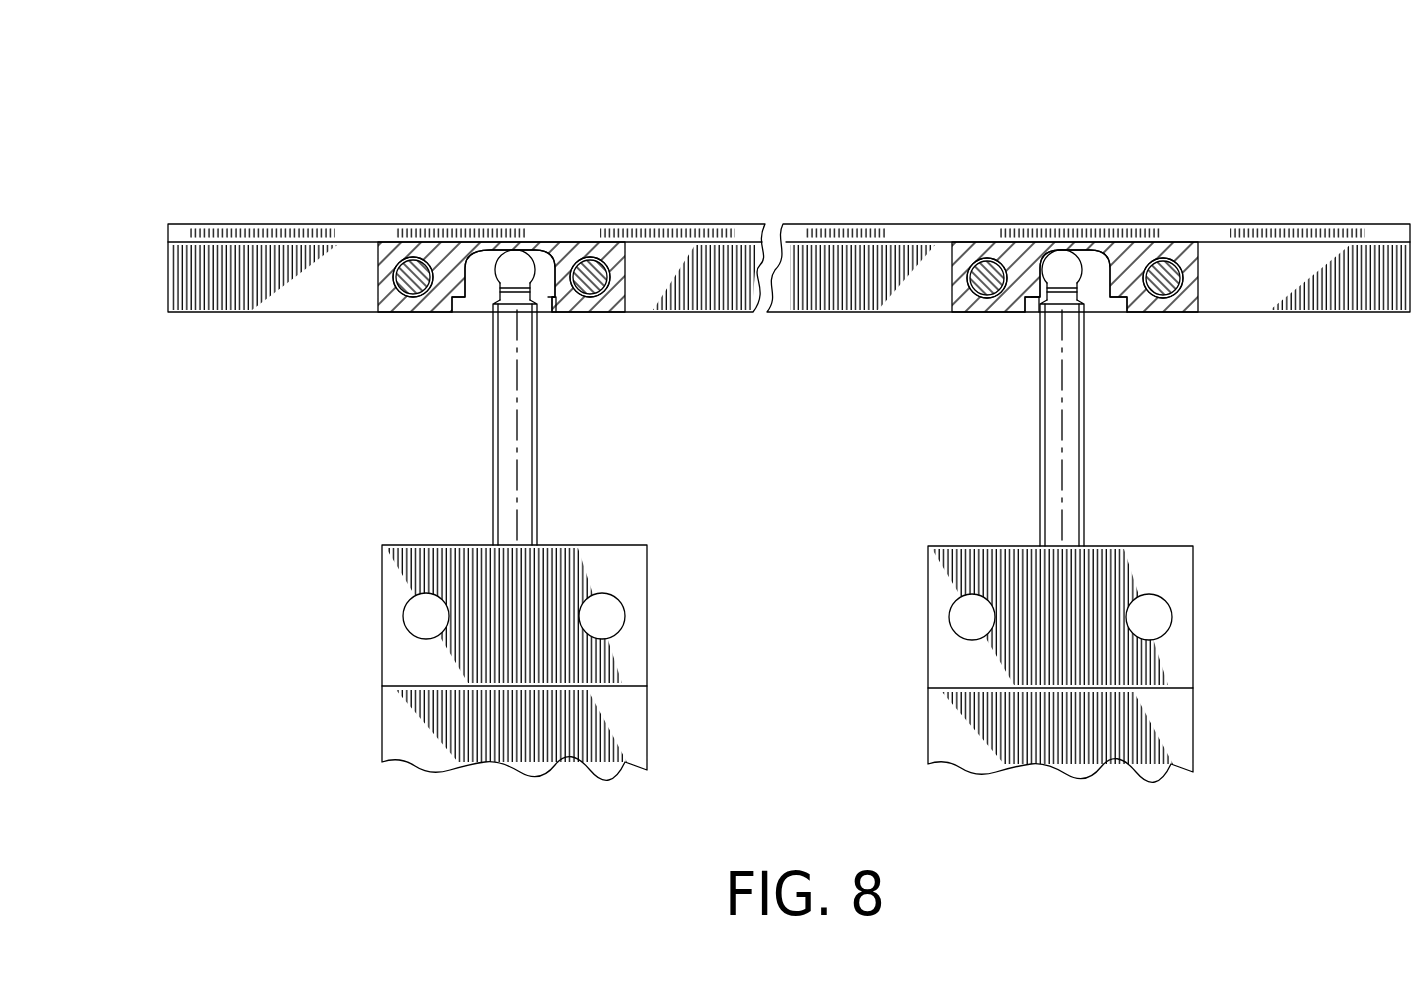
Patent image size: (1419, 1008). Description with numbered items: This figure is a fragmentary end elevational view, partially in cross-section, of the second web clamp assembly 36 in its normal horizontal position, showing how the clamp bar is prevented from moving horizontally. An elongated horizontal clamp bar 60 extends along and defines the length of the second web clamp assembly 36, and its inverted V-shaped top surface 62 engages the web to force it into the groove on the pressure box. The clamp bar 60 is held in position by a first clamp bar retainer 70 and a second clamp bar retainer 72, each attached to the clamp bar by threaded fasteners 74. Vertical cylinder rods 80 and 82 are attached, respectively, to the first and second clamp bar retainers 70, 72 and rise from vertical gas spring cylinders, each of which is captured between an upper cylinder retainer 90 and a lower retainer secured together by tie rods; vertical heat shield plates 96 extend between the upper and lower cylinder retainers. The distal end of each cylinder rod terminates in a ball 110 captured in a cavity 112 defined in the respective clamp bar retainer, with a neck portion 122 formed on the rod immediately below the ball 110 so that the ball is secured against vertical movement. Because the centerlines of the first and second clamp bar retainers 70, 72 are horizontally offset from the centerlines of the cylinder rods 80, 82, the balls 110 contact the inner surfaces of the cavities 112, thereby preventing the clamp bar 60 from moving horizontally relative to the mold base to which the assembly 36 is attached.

The second web clamp assembly 36 is at (959, 133).
The clamp bar 60 is at (655, 267).
The inverted V-shaped top surface 62 is at (808, 236).
The first clamp bar retainer 70 is at (438, 262).
The second clamp bar retainer 72 is at (1128, 258).
The threaded fasteners 74 is at (413, 257).
The first cylinder rod 80 is at (503, 428).
The second cylinder rod 82 is at (1050, 428).
The upper cylinder retainer 90 is at (628, 577).
The vertical heat shield plates 96 is at (628, 717).
The ball 110 is at (516, 262).
The cavity 112 is at (467, 312).
The neck portion 122 is at (533, 297).